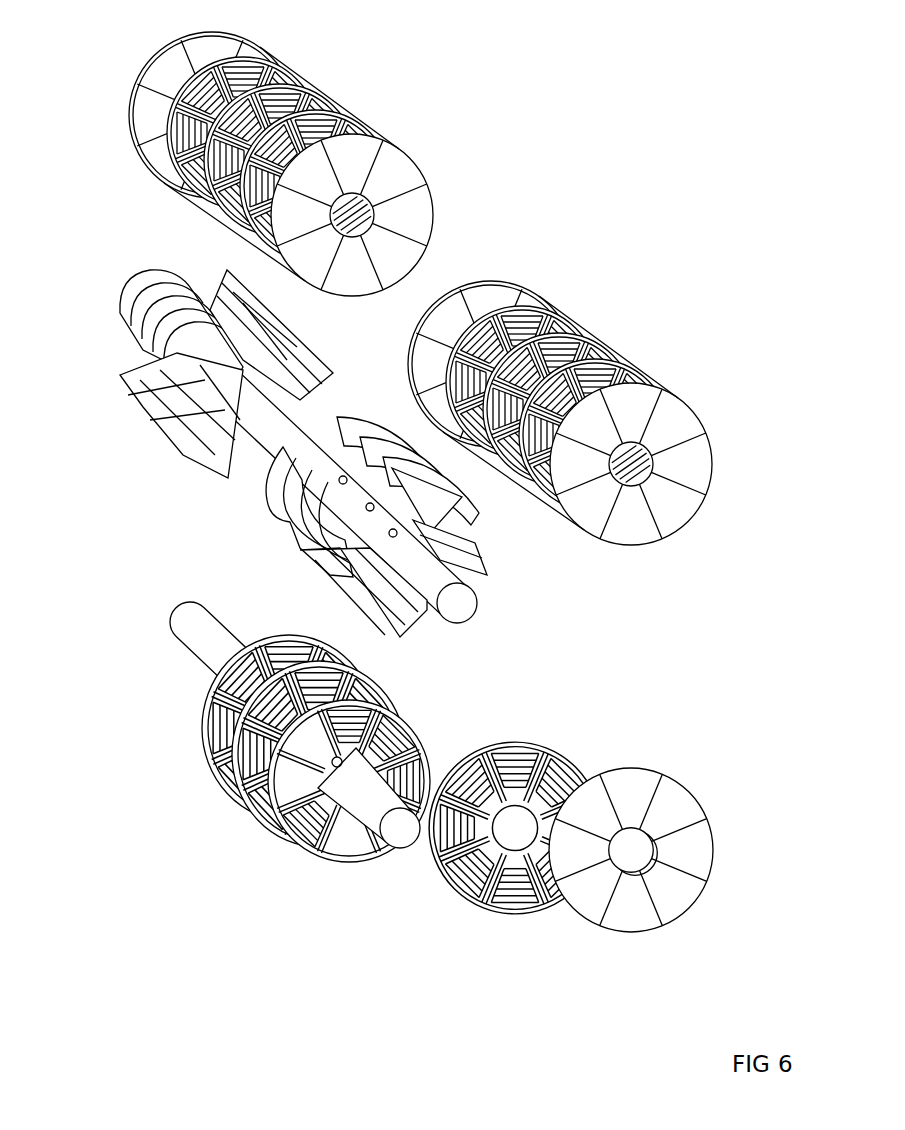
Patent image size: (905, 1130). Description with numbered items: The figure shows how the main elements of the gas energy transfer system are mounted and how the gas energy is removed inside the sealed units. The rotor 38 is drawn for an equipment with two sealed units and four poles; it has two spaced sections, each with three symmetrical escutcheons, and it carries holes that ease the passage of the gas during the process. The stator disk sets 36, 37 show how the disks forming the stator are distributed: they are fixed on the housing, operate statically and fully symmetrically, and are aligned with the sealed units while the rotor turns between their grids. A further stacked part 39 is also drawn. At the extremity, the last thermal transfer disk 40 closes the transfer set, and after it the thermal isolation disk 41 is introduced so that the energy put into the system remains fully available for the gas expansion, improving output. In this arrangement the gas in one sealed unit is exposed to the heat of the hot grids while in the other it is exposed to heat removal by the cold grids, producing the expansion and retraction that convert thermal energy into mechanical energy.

The stator disk set 36 is at (363, 87).
The stator disk set 37 is at (640, 340).
The rotor 38 is at (180, 478).
The stator core with shaft 39 is at (227, 791).
The last thermal transfer disk 40 is at (547, 740).
The thermal isolation disk 41 is at (672, 768).